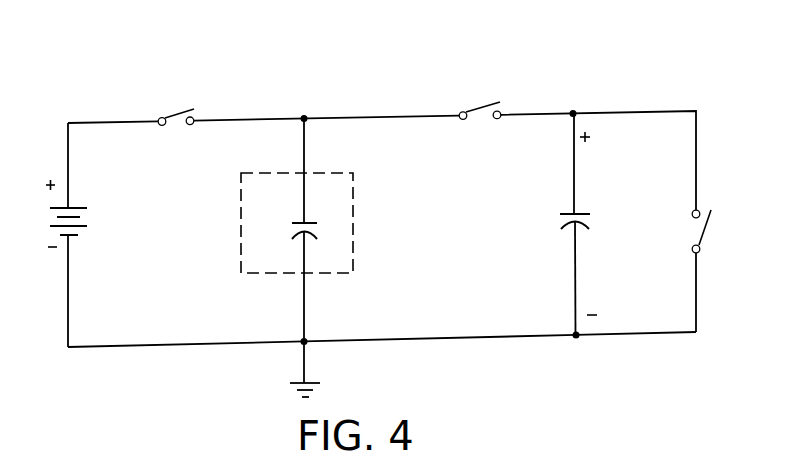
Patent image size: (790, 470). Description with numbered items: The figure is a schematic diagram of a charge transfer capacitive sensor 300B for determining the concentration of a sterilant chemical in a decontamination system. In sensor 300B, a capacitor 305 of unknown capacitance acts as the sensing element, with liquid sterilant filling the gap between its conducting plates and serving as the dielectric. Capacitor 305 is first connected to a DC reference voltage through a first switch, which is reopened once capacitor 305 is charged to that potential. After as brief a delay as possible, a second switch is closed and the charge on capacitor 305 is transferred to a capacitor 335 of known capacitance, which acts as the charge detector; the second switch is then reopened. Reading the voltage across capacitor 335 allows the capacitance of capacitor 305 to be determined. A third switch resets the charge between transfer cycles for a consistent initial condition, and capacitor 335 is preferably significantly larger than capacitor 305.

The sensor 300B is at (90, 90).
The capacitor 305 is at (354, 228).
The capacitor 335 is at (568, 207).